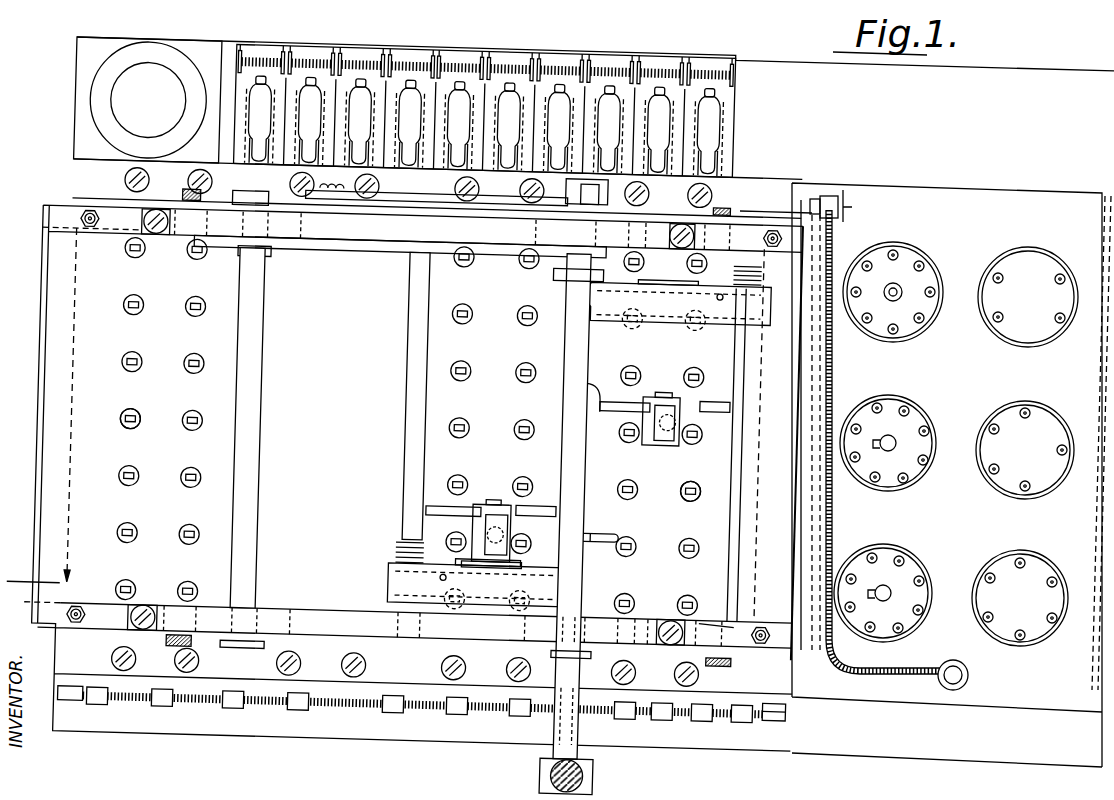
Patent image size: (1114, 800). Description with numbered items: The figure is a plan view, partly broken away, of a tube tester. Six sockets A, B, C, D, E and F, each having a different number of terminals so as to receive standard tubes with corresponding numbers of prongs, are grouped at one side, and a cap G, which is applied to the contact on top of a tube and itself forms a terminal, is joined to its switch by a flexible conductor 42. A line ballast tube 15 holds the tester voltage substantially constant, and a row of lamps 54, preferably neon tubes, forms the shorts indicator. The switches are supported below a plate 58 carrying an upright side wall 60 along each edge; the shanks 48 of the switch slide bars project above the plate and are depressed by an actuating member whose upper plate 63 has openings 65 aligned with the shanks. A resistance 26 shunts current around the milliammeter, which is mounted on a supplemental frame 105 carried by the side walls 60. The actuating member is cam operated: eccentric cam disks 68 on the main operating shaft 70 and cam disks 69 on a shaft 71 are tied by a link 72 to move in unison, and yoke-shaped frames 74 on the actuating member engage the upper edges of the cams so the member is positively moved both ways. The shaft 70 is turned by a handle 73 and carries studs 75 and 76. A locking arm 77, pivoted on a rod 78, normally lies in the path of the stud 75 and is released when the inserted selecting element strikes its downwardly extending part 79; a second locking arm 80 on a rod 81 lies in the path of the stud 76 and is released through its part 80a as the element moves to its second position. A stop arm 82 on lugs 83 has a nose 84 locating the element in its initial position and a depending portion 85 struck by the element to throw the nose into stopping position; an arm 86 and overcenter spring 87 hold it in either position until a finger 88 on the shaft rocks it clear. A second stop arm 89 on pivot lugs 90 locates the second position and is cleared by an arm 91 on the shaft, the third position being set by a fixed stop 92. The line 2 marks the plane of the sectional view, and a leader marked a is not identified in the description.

The line ballast tube 15 is at (148, 99).
The lamp 54 is at (485, 110).
The side wall 60 is at (105, 198).
The eccentric cam disks 69 is at (303, 224).
The yoke-shaped frame 74 is at (424, 428).
The eccentric cam disks 68 is at (636, 228).
The link 72 is at (338, 250).
The upper plate of actuating member 63 is at (413, 478).
The openings 65 is at (145, 367).
The shank 48 is at (144, 424).
The shaft 71 is at (262, 470).
The rod 78 is at (416, 441).
The stud 76 is at (580, 287).
The part of locking arm 80a is at (667, 302).
The locking arm 80 is at (686, 304).
The pivot lugs 90 is at (665, 386).
The rod 81 is at (753, 380).
The arm 91 is at (591, 414).
The second stop arm 89 is at (731, 394).
The main operating shaft 70 is at (592, 444).
The depending portion 85 is at (460, 500).
The pivot lugs 83 is at (492, 500).
The arm 86 is at (508, 504).
The nose 84 is at (552, 498).
The stop arm 82 is at (490, 512).
The spring 87 is at (536, 538).
The finger 88 is at (626, 513).
The fixed stop 92 is at (806, 481).
The downwardly extending part 79 is at (506, 572).
The locking arm 77 is at (501, 580).
The stud 75 is at (598, 575).
The conductor 42 is at (832, 366).
The supplemental frame 105 is at (184, 641).
The resistance 26 is at (421, 715).
The plate 58 is at (392, 699).
The handle 73 is at (614, 764).
The section line 2 is at (376, 607).
The panel edge a is at (44, 329).
The cap G is at (838, 206).
The socket A is at (1028, 297).
The socket B is at (1025, 450).
The socket C is at (1020, 598).
The socket D is at (893, 292).
The socket E is at (888, 443).
The socket F is at (883, 593).